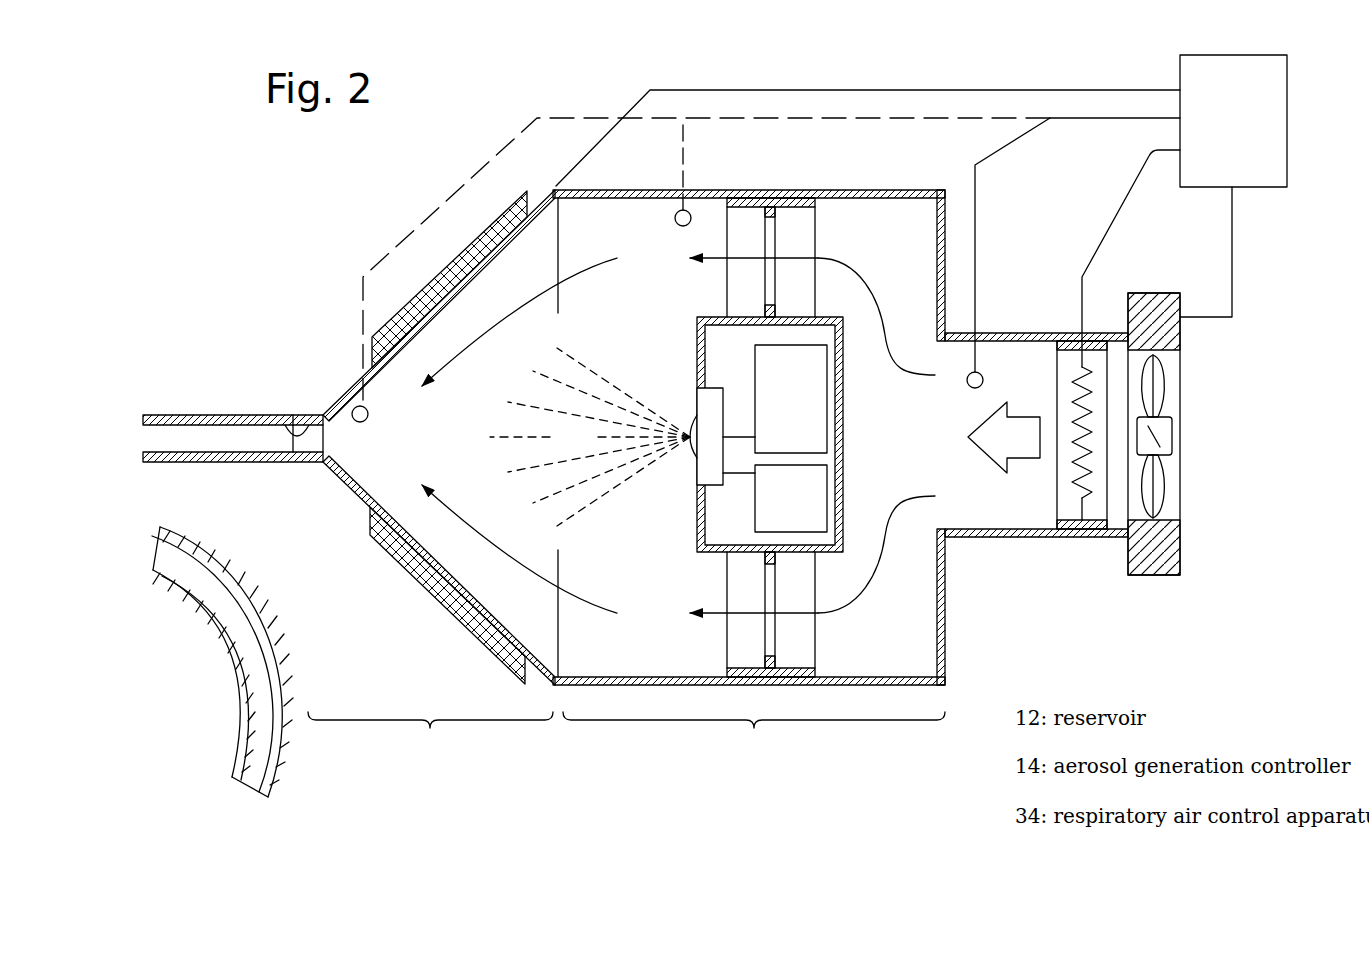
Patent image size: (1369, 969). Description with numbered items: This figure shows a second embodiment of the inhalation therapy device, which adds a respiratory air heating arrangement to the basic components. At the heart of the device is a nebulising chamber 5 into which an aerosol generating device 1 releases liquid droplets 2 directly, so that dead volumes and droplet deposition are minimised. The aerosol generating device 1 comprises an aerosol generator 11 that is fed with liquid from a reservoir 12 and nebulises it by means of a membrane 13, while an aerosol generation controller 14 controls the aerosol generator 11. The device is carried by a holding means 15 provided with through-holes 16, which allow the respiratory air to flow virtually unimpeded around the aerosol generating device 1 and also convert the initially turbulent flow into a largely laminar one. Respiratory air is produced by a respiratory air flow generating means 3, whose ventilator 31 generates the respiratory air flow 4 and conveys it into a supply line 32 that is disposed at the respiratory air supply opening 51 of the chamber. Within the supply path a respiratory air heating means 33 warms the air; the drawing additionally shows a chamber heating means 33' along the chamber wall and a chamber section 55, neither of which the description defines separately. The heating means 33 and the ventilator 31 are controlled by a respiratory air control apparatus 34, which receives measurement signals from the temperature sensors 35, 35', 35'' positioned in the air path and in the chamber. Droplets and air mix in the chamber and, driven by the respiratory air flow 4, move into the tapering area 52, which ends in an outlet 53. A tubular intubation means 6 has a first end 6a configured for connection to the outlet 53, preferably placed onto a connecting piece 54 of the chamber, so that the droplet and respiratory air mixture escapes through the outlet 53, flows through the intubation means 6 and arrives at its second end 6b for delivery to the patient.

The aerosol generating device 1 is at (686, 340).
The liquid droplets 2 is at (580, 452).
The respiratory air flow generating means 3 is at (1165, 381).
The respiratory air flow 4 is at (1031, 452).
The nebulising chamber 5 is at (457, 226).
The tubular intubation means 6 is at (222, 476).
The first end 6a is at (303, 416).
The second end 6b is at (277, 780).
The aerosol generator 11 is at (710, 398).
The reservoir 12 is at (806, 414).
The membrane 13 is at (686, 414).
The aerosol generation controller 14 is at (806, 513).
The holding means 15 is at (807, 236).
The through-holes 16 is at (772, 280).
The ventilator 31 is at (1152, 300).
The supply line 32 is at (1032, 333).
The respiratory air heating means 33 is at (1088, 370).
The chamber heater 33' is at (436, 437).
The respiratory air control apparatus 34 is at (1250, 136).
The temperature sensor 35 is at (1073, 256).
The temperature sensor 35' is at (639, 184).
The temperature sensor 35'' is at (411, 410).
The respiratory air supply opening 51 is at (935, 432).
The tapering area 52 is at (431, 478).
The outlet 53 is at (325, 440).
The connecting piece 54 is at (297, 433).
The main chamber section 55 is at (754, 739).